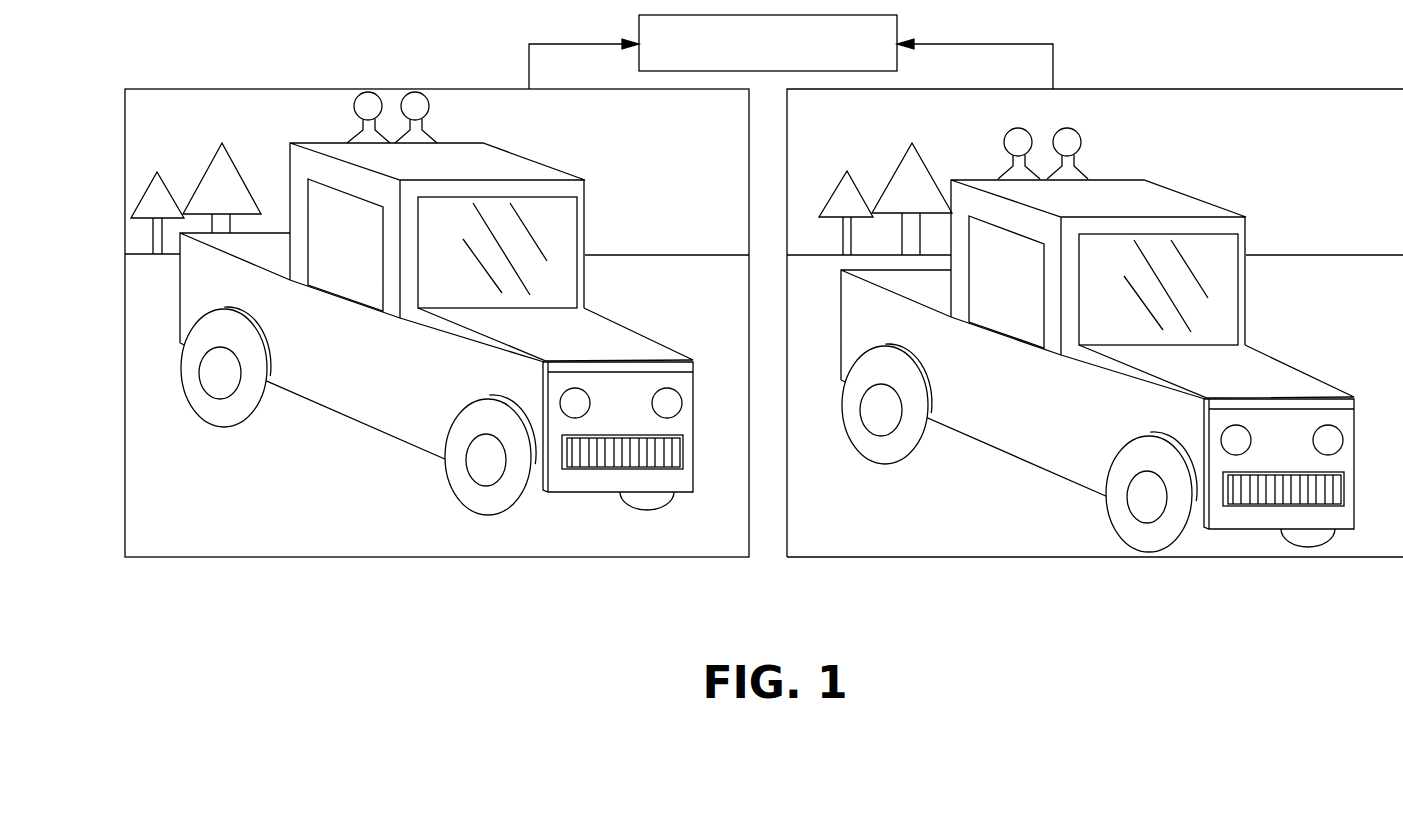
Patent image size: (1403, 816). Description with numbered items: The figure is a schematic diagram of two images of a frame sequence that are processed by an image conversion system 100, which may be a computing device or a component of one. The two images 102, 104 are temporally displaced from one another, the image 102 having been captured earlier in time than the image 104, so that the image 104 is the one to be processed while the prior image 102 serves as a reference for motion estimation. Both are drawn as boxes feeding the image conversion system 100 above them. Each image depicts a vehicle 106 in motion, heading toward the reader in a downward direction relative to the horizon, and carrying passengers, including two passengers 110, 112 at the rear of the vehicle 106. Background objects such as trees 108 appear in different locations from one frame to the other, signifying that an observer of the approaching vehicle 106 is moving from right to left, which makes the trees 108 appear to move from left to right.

The image conversion system 100 is at (748, 53).
The image 102 is at (437, 323).
The image 104 is at (1025, 558).
The vehicle 106 is at (290, 163).
The trees 108 is at (209, 165).
The passenger 110 is at (353, 107).
The passenger 112 is at (413, 90).